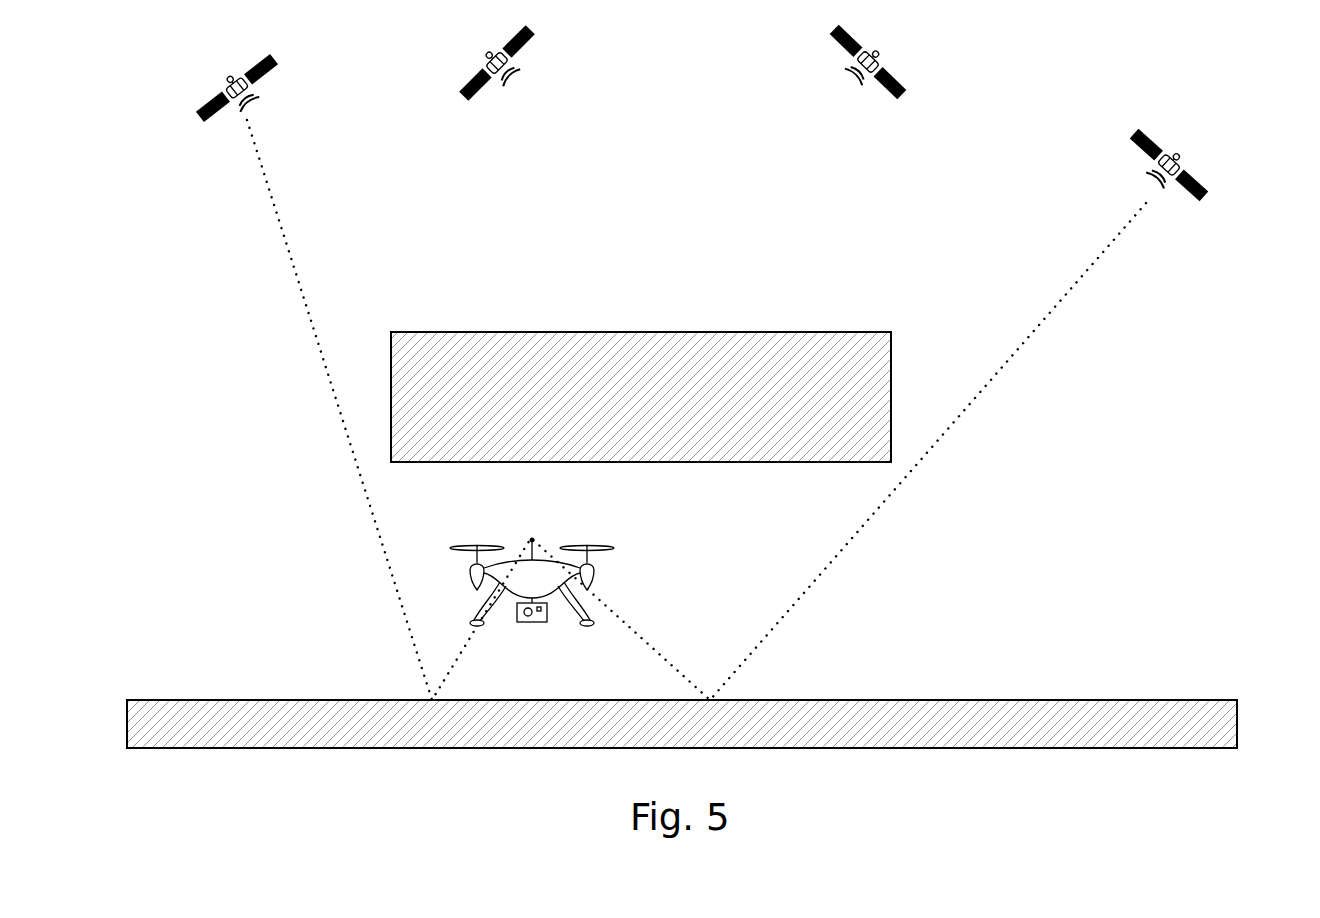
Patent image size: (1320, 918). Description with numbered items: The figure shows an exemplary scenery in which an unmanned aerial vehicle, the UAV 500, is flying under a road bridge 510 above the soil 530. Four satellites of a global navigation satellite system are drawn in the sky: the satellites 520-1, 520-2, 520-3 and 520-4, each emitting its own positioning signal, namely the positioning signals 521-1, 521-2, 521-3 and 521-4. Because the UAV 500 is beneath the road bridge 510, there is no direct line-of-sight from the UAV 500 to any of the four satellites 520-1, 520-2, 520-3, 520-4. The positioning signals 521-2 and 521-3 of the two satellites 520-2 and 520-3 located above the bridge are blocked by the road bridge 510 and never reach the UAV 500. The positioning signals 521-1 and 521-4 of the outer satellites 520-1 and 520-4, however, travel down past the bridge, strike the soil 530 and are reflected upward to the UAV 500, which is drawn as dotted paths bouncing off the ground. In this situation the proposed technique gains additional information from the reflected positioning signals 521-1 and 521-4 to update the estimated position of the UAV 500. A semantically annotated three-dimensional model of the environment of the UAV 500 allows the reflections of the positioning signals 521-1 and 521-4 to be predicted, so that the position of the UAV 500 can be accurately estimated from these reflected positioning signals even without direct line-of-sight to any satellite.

The UAV 500 is at (600, 548).
The road bridge 510 is at (617, 332).
The soil 530 is at (985, 700).
The satellite 520-1 is at (268, 60).
The satellite 520-2 is at (532, 31).
The satellite 520-3 is at (888, 68).
The satellite 520-4 is at (1188, 171).
The positioning signal 521-1 is at (250, 124).
The positioning signal 521-2 is at (517, 88).
The positioning signal 521-3 is at (852, 92).
The positioning signal 521-4 is at (1152, 187).